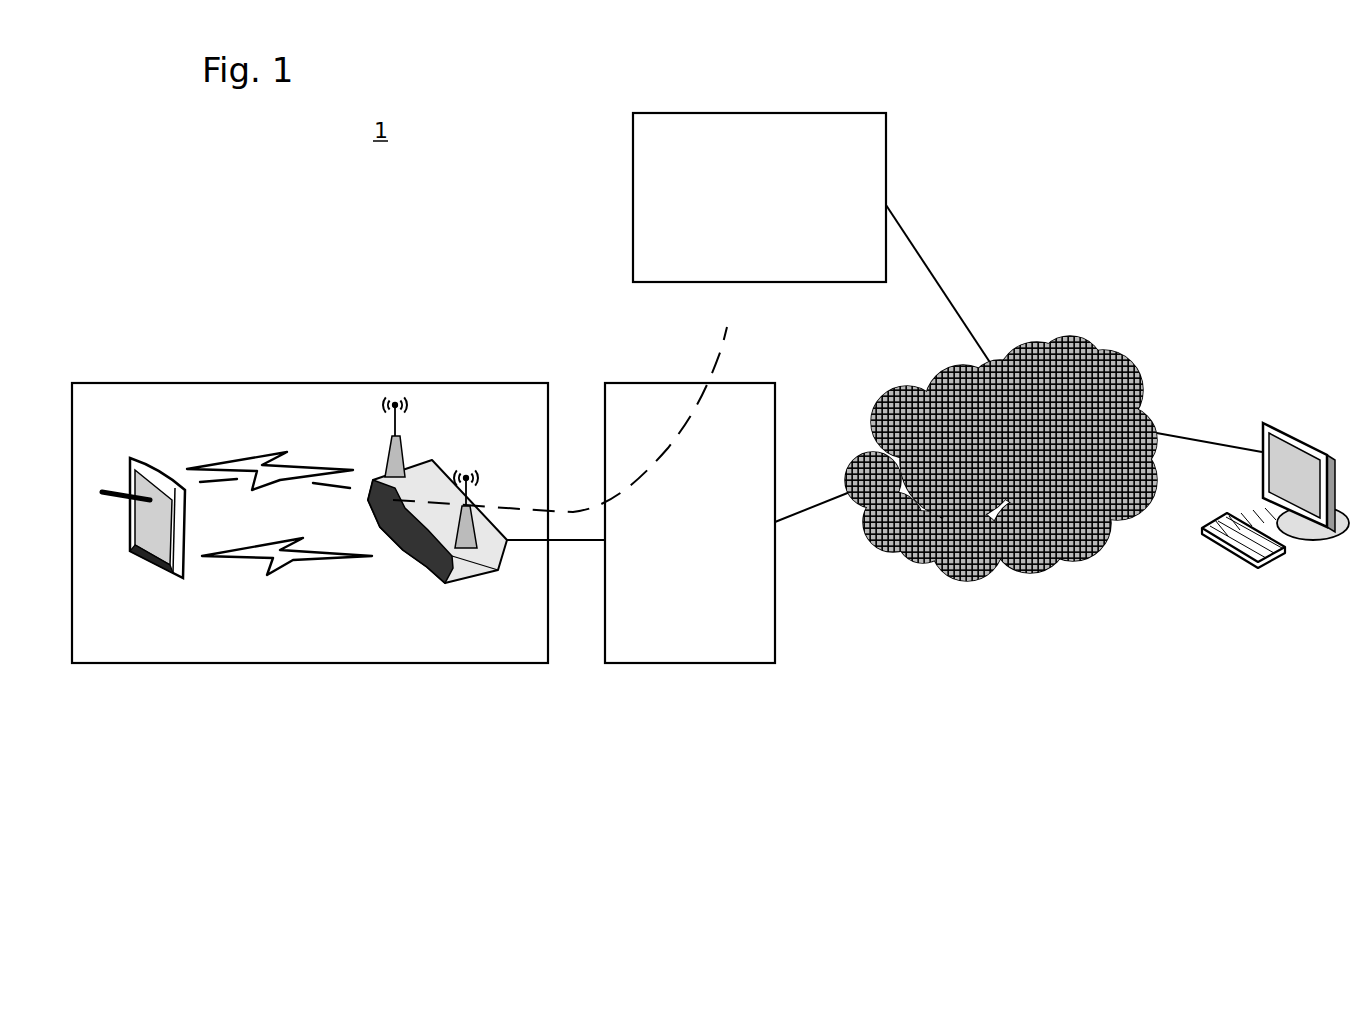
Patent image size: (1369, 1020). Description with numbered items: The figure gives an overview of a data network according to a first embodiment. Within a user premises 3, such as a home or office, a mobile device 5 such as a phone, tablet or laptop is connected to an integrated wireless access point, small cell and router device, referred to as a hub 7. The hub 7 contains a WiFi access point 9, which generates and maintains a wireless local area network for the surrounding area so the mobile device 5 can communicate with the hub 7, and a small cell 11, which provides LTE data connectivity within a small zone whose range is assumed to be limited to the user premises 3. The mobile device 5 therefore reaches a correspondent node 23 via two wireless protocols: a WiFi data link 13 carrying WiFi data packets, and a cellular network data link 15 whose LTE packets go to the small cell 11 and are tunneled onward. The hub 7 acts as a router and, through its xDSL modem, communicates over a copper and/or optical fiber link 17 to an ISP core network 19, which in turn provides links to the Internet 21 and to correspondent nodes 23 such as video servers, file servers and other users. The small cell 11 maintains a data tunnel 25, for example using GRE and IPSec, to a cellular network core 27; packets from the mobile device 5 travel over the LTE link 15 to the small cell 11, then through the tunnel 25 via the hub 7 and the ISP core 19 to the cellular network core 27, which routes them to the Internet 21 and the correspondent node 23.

The user premises 3 is at (405, 383).
The mobile device 5 is at (148, 565).
The hub 7 is at (430, 568).
The WiFi access point 9 is at (467, 550).
The small cell 11 is at (408, 447).
The WiFi data link 13 is at (315, 568).
The cellular network data link 15 is at (238, 452).
The copper and/or optical fiber link 17 is at (588, 541).
The ISP core network 19 is at (775, 617).
The Internet 21 is at (1027, 560).
The correspondent node 23 is at (1316, 445).
The data tunnel 25 is at (727, 327).
The cellular network core 27 is at (800, 113).